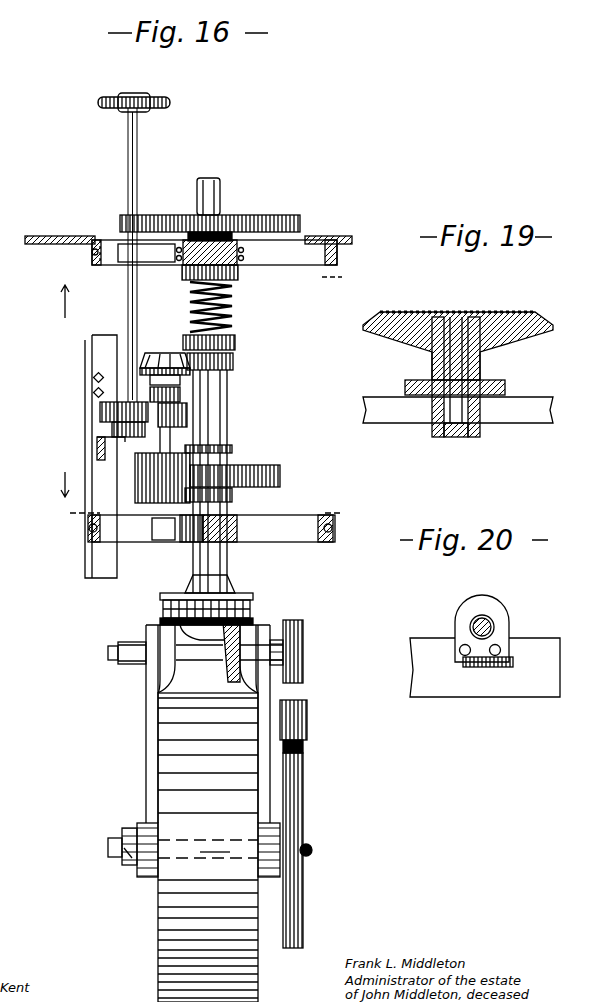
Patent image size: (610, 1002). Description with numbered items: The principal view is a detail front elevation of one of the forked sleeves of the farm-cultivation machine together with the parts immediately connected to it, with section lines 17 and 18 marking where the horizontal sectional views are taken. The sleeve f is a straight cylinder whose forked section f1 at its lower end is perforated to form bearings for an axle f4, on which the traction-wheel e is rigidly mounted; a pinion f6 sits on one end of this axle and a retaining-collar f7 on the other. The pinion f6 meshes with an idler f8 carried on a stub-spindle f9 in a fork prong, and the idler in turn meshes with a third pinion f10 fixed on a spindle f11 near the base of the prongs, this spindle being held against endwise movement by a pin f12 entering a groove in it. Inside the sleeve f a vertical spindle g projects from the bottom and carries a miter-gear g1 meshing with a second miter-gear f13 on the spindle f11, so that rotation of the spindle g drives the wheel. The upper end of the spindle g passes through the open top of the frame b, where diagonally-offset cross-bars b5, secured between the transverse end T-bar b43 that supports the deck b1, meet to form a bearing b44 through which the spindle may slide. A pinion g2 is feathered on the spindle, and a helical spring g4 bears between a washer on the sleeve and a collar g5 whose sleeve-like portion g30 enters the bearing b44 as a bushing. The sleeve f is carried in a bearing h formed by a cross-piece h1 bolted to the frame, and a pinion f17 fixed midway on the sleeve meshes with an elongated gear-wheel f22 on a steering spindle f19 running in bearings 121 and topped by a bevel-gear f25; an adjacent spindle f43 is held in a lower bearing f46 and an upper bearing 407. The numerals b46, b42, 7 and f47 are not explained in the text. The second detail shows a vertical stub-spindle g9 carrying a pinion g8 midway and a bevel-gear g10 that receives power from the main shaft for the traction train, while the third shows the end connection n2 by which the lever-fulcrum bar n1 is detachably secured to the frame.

In FIG. 16, the vertical spindle f43 is at (127, 147).
In FIG. 16, the vertical spindle g is at (222, 190).
In FIG. 16, the hub b46 is at (197, 207).
In FIG. 16, the pinion g2 is at (284, 215).
In FIG. 16, the cross-bars b5 is at (214, 252).
In FIG. 19, the cross-bars b5 is at (402, 413).
In FIG. 16, the bearing b44 is at (146, 253).
In FIG. 16, the deck b1 is at (47, 236).
In FIG. 16, the plate b42 is at (340, 236).
In FIG. 16, the bearings 407 is at (107, 250).
In FIG. 16, the transverse end T-bar b43 is at (91, 252).
In FIG. 16, the section line 7 is at (95, 278).
In FIG. 16, the section line 17 is at (342, 278).
In FIG. 16, the sleeve-like portion g30 is at (188, 282).
In FIG. 16, the helical spring g4 is at (232, 300).
In FIG. 16, the collar g5 is at (237, 340).
In FIG. 16, the sleeve f is at (228, 403).
In FIG. 16, the bevel-gear f25 is at (158, 353).
In FIG. 16, the bearings 121 is at (186, 396).
In FIG. 16, the bearings f46 is at (150, 422).
In FIG. 16, the gear f47 is at (100, 411).
In FIG. 16, the vertical spindle f19 is at (175, 442).
In FIG. 16, the elongated gear-wheel f22 is at (135, 480).
In FIG. 16, the pinion f17 is at (276, 465).
In FIG. 16, the frame b is at (92, 530).
In FIG. 16, the section line 18 is at (205, 513).
In FIG. 16, the cross-pieces h1 is at (211, 528).
In FIG. 16, the bearings h is at (228, 542).
In FIG. 16, the miter-gear g1 is at (214, 620).
In FIG. 16, the pin f12 is at (150, 638).
In FIG. 16, the forked section f1 is at (146, 732).
In FIG. 16, the miter-gear f13 is at (226, 665).
In FIG. 16, the spindle f11 is at (118, 653).
In FIG. 16, the third pinion f10 is at (305, 625).
In FIG. 16, the stub-spindle f9 is at (308, 718).
In FIG. 16, the idler f8 is at (305, 745).
In FIG. 16, the pinion f6 is at (305, 798).
In FIG. 16, the traction-wheel e is at (208, 847).
In FIG. 16, the axle f4 is at (108, 855).
In FIG. 16, the retaining-collar f7 is at (125, 858).
In FIG. 19, the vertical stub-spindle g9 is at (445, 361).
In FIG. 19, the bevel-gear g10 is at (527, 326).
In FIG. 19, the pinion g8 is at (505, 386).
In FIG. 20, the bar n1 is at (468, 628).
In FIG. 20, the detachable connection n2 is at (490, 617).